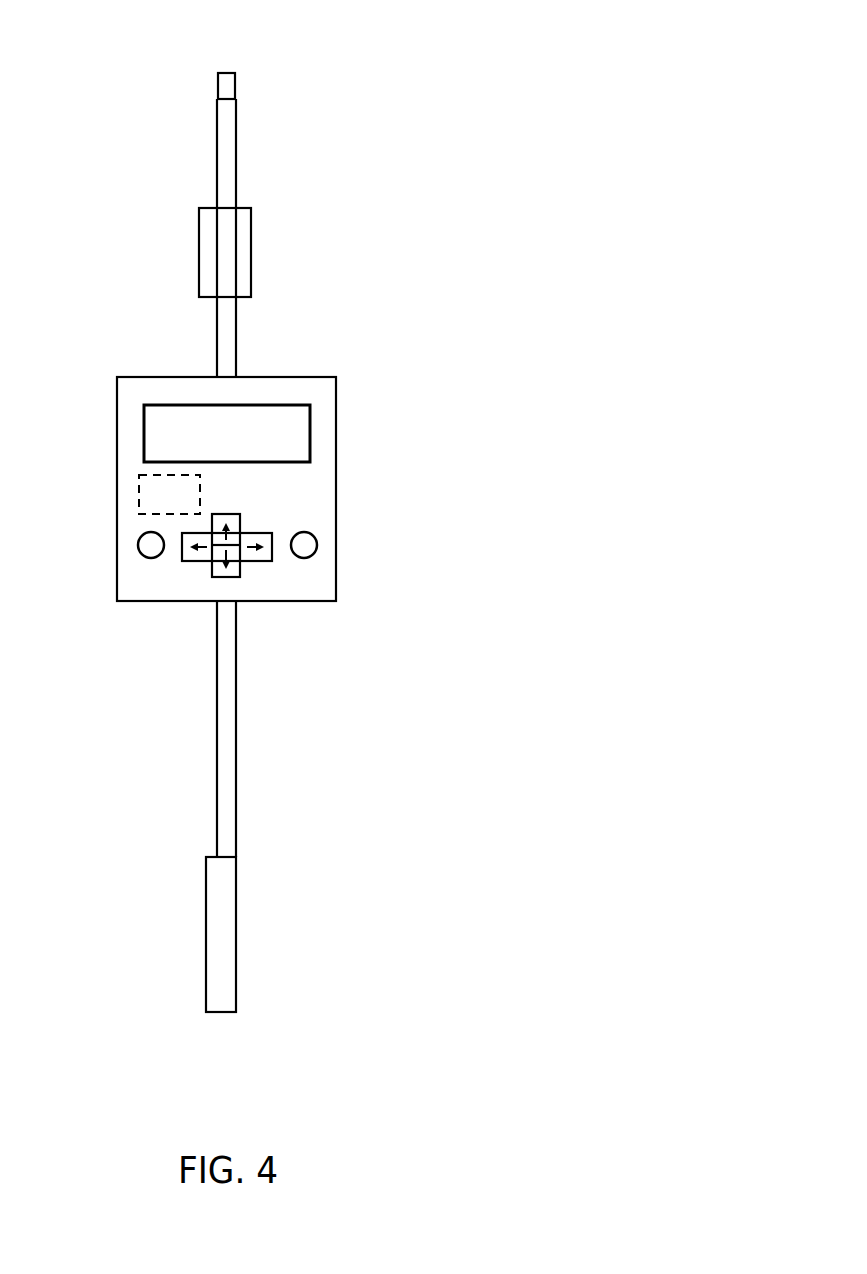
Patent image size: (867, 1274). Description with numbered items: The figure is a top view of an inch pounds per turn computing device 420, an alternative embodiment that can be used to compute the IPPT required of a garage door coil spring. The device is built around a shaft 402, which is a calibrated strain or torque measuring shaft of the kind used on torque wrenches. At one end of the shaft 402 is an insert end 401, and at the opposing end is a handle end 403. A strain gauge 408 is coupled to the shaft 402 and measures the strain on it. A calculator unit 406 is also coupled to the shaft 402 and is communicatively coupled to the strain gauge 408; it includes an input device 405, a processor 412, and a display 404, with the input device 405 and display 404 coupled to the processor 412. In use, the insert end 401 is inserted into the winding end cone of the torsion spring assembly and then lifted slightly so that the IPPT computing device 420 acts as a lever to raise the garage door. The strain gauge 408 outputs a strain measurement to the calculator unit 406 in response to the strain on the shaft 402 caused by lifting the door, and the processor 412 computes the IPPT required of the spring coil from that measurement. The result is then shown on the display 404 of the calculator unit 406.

The insert end 401 is at (231, 80).
The shaft 402 is at (227, 167).
The handle end 403 is at (222, 970).
The display 404 is at (158, 445).
The input device 405 is at (230, 538).
The calculator unit 406 is at (322, 393).
The strain gauge 408 is at (242, 238).
The processor 412 is at (148, 497).
The IPPT computing device 420 is at (433, 70).